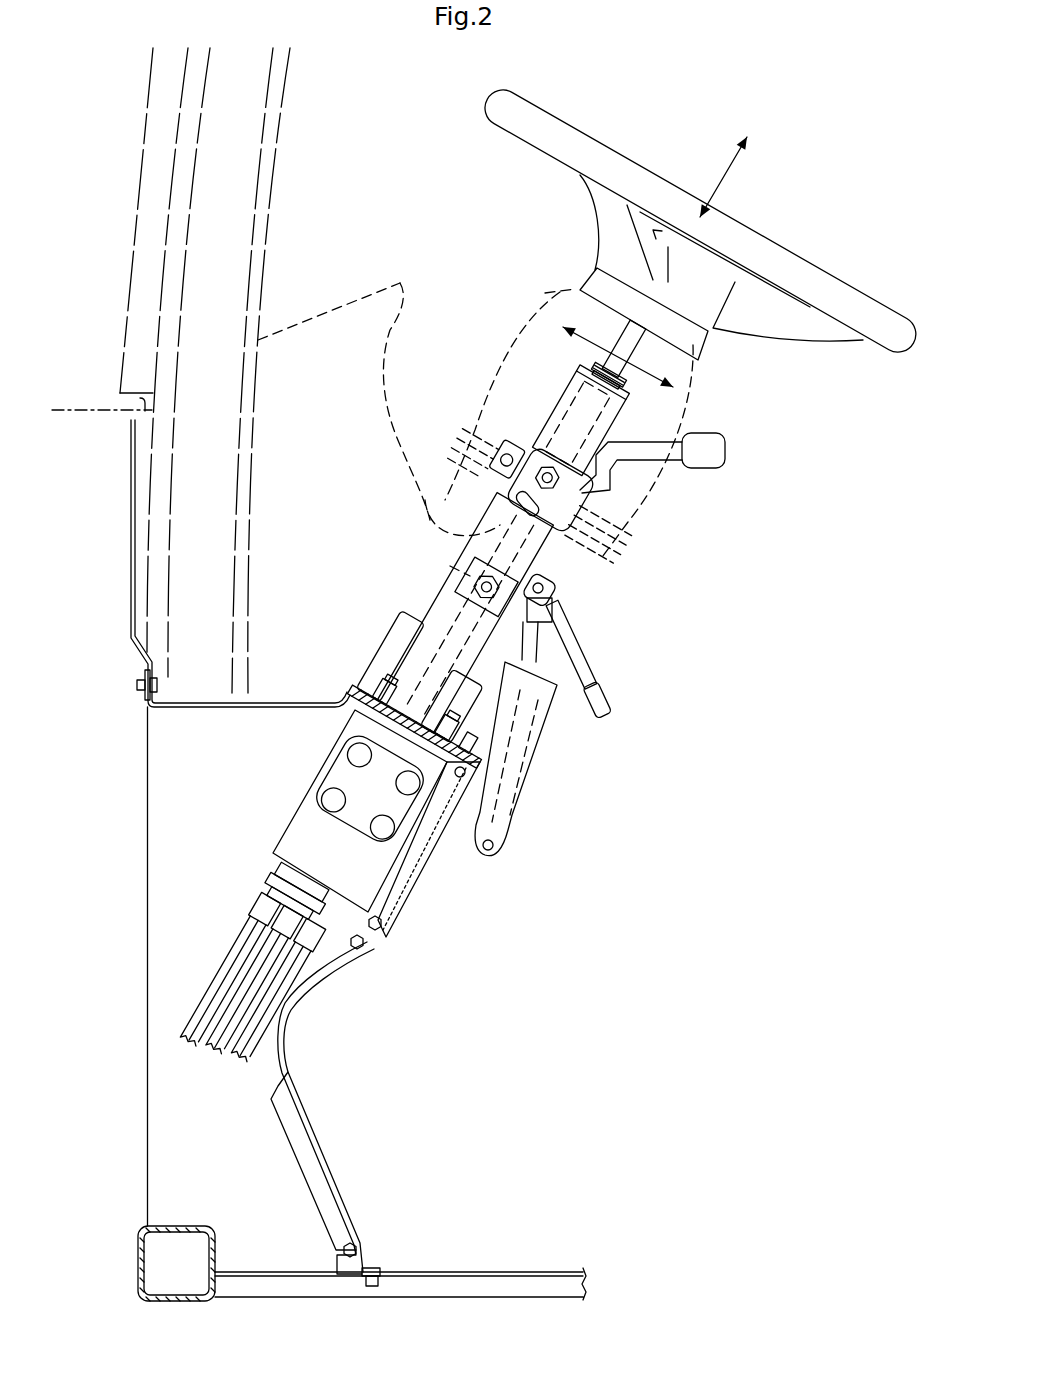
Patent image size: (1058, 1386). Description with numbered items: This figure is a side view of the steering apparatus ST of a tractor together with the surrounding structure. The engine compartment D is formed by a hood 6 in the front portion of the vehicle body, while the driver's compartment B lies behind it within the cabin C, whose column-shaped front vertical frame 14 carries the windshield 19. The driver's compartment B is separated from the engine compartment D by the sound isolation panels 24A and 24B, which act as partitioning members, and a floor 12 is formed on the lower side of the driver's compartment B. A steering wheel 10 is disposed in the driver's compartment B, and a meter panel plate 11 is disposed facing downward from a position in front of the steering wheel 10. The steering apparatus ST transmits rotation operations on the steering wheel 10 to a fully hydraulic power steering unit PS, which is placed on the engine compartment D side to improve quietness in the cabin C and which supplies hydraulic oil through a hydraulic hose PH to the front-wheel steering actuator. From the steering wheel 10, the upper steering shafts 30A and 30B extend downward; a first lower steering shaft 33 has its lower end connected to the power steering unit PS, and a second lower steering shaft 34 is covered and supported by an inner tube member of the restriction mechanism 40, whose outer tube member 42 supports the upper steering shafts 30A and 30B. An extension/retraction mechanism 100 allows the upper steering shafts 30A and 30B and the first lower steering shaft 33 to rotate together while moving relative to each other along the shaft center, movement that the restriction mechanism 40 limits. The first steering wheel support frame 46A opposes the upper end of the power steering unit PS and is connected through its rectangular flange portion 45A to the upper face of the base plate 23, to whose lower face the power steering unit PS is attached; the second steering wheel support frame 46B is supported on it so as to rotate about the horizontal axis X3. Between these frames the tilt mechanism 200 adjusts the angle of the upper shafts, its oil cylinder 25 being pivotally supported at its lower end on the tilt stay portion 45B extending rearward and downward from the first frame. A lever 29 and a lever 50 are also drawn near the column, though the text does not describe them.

The cabin C is at (147, 99).
The windshield 19 is at (128, 210).
The front vertical frame 14 is at (247, 190).
The hood 6 is at (83, 393).
The meter panel plate 11 is at (400, 282).
The steering wheel 10 is at (770, 243).
The upper steering shaft 30A is at (603, 318).
The upper steering shaft 30B is at (540, 403).
The extension/retraction mechanism 100 is at (538, 428).
The outer tube member 42 is at (623, 403).
The second lower steering shaft 34 is at (430, 508).
The operation lever 50 is at (712, 466).
The restriction mechanism 40 is at (633, 496).
The horizontal axis X3 is at (450, 566).
The second steering wheel support frame 46B is at (568, 545).
The first lower steering shaft 33 is at (410, 620).
The first steering wheel support frame 46A is at (397, 655).
The flange portion 45A is at (350, 690).
The sound isolation panel 24A is at (173, 709).
The base plate 23 is at (393, 734).
The tilt lever 29 is at (603, 688).
The power steering unit PS is at (322, 782).
The oil cylinder 25 is at (520, 755).
The tilt mechanism 200 is at (573, 733).
The tilt stay portion 45B is at (500, 818).
The engine compartment D is at (202, 871).
The hydraulic hose PH is at (233, 1003).
The steering apparatus ST is at (683, 862).
The sound isolation panel 24B is at (381, 937).
The driver's compartment B is at (554, 1029).
The floor 12 is at (466, 1272).